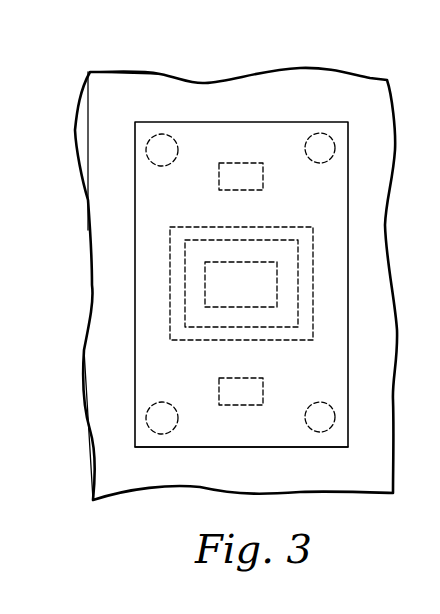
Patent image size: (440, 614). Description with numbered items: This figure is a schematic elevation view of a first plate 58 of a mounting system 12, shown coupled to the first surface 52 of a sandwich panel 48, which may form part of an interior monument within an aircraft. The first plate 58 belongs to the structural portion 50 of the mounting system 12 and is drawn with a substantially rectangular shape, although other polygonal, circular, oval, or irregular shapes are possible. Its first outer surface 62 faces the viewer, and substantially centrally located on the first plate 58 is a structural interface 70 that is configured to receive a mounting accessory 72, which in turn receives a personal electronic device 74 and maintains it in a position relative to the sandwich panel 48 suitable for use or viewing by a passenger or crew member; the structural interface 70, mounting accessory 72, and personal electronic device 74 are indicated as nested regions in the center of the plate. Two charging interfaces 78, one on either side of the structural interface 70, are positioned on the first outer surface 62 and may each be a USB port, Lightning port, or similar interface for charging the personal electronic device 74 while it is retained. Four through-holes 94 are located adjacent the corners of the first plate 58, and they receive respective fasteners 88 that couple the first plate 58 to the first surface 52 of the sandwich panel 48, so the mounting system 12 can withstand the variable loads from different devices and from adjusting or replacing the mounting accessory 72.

The mounting system 12 is at (68, 133).
The sandwich panel 48 is at (82, 427).
The structural portion 50 is at (127, 281).
The first surface 52 is at (121, 105).
The first plate 58 is at (218, 142).
The first outer surface 62 is at (313, 202).
The structural interface 70 is at (205, 227).
The mounting accessory 72 is at (195, 315).
The personal electronic device 74 is at (258, 290).
The charging interface 78 is at (255, 163).
The fastener 88 is at (320, 147).
The through-hole 94 is at (165, 140).